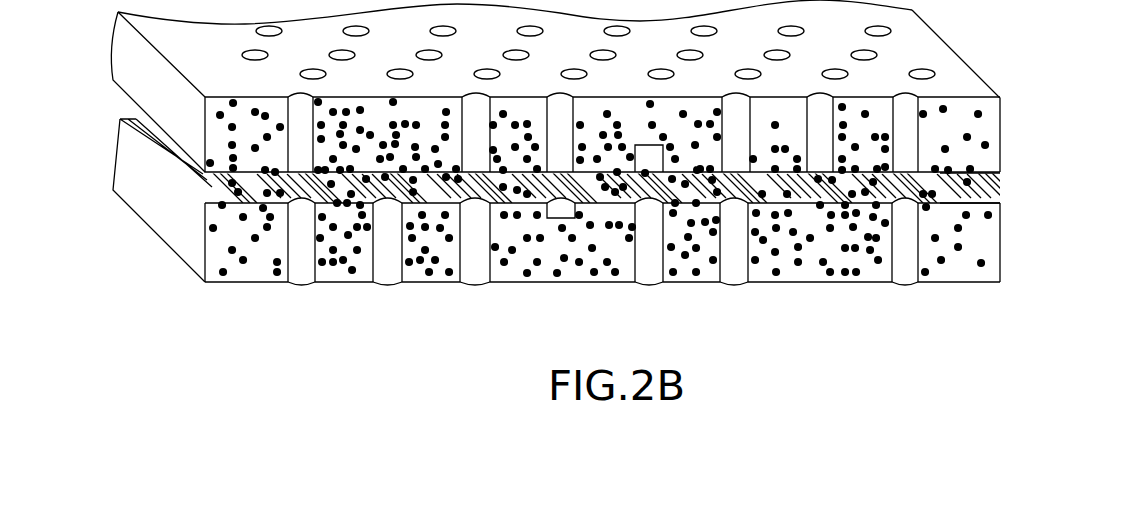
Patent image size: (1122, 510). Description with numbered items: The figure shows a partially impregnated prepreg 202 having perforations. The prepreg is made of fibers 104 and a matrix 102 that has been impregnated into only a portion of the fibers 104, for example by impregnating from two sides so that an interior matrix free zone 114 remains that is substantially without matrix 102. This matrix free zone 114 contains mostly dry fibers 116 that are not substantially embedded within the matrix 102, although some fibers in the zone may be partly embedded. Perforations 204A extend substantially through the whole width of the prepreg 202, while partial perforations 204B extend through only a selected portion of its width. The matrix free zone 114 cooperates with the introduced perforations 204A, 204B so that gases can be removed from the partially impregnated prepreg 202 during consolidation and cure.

The matrix 102 is at (437, 107).
The fibers 104 is at (266, 110).
The matrix free zone 114 is at (977, 193).
The dry fibers 116 is at (203, 177).
The partially impregnated prepreg 202 is at (605, 175).
The perforations 204A is at (302, 267).
The partial perforations 204B is at (652, 270).